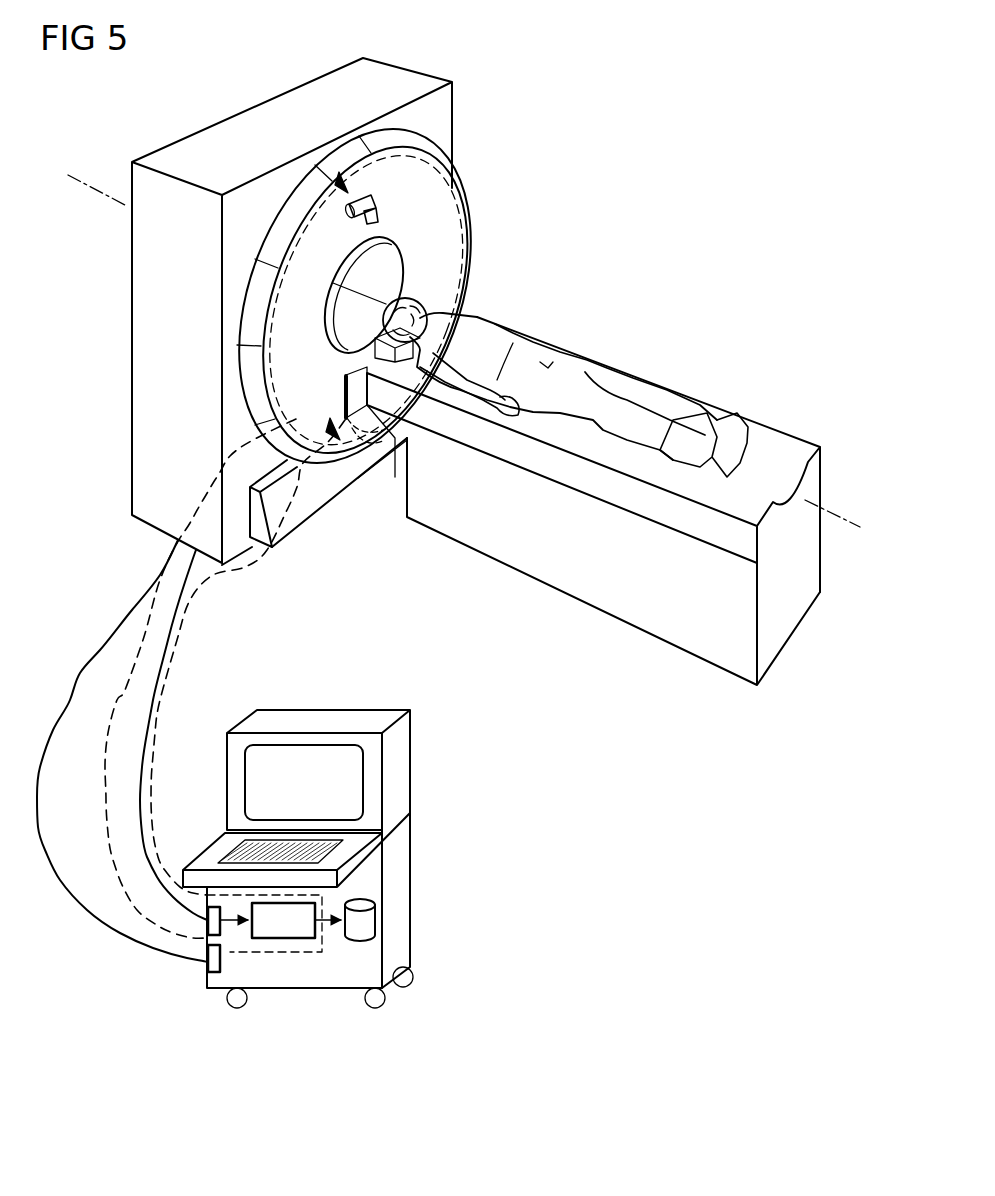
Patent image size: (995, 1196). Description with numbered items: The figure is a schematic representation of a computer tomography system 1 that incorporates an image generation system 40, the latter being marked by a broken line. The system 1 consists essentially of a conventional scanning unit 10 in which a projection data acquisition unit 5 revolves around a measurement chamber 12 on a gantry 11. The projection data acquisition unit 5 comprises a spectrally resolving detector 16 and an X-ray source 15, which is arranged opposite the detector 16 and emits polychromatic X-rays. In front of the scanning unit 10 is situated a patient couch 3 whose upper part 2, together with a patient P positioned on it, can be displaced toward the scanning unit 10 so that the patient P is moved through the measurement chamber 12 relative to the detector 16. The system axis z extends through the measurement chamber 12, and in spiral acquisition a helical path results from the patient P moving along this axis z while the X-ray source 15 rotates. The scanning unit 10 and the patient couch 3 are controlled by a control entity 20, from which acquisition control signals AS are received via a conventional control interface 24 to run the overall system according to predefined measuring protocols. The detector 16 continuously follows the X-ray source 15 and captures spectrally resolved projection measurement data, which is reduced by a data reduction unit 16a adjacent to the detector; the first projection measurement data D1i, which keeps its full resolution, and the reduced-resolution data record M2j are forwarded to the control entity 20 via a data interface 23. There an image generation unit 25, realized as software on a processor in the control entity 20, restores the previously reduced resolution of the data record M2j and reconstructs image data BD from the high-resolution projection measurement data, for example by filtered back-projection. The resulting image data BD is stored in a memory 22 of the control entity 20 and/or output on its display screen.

The computer tomography system 1 is at (692, 188).
The upper part 2 is at (742, 440).
The patient couch 3 is at (540, 575).
The projection data acquisition unit 5 is at (338, 180).
The scanning unit 10 is at (157, 527).
The gantry 11 is at (458, 203).
The measurement chamber 12 is at (348, 278).
The X-ray source 15 is at (380, 200).
The detector 16 is at (345, 398).
The data reduction unit 16a is at (362, 468).
The control entity 20 is at (333, 698).
The memory 22 is at (382, 920).
The data interface 23 is at (208, 926).
The control interface 24 is at (208, 966).
The image generation unit 25 is at (295, 938).
The image generation system 40 is at (165, 699).
The acquisition control signals AS is at (90, 652).
The first projection measurement data D1i is at (170, 653).
The projection measurement data record with reduced resolution M2j is at (147, 768).
The patient P is at (583, 372).
The system axis z is at (838, 498).
The image data BD is at (322, 922).